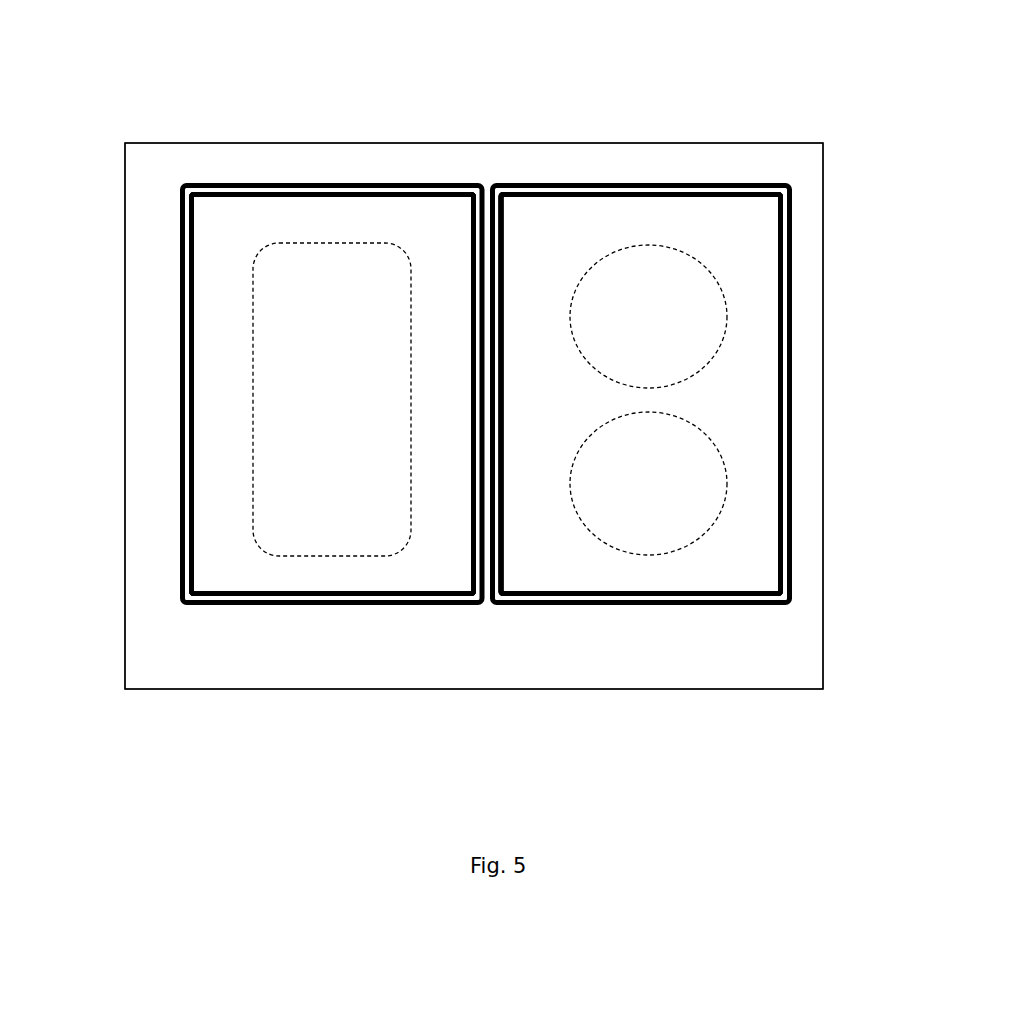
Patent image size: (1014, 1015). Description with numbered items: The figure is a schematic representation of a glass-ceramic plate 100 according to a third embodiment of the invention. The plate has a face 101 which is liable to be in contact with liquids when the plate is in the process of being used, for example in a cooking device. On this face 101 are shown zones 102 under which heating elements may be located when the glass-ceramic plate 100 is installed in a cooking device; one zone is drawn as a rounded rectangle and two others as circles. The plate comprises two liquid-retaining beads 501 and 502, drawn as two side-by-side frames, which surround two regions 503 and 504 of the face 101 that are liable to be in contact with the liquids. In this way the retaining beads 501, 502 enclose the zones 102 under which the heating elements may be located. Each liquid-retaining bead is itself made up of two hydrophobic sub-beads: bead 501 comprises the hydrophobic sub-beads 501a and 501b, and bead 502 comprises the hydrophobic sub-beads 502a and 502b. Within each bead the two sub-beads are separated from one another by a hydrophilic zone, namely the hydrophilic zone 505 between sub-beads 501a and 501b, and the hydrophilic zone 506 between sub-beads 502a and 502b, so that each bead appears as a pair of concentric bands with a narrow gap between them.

The glass-ceramic plate 100 is at (155, 117).
The face 101 is at (649, 165).
The zones 102 is at (253, 400).
The liquid-retaining bead 501 is at (662, 471).
The hydrophobic sub-bead 501a is at (542, 605).
The hydrophobic sub-bead 501b is at (617, 605).
The liquid-retaining bead 502 is at (337, 470).
The hydrophobic sub-bead 502a is at (203, 605).
The hydrophobic sub-bead 502b is at (278, 605).
The region 503 is at (404, 221).
The region 504 is at (548, 221).
The hydrophilic zone 505 is at (757, 604).
The hydrophilic zone 506 is at (413, 604).